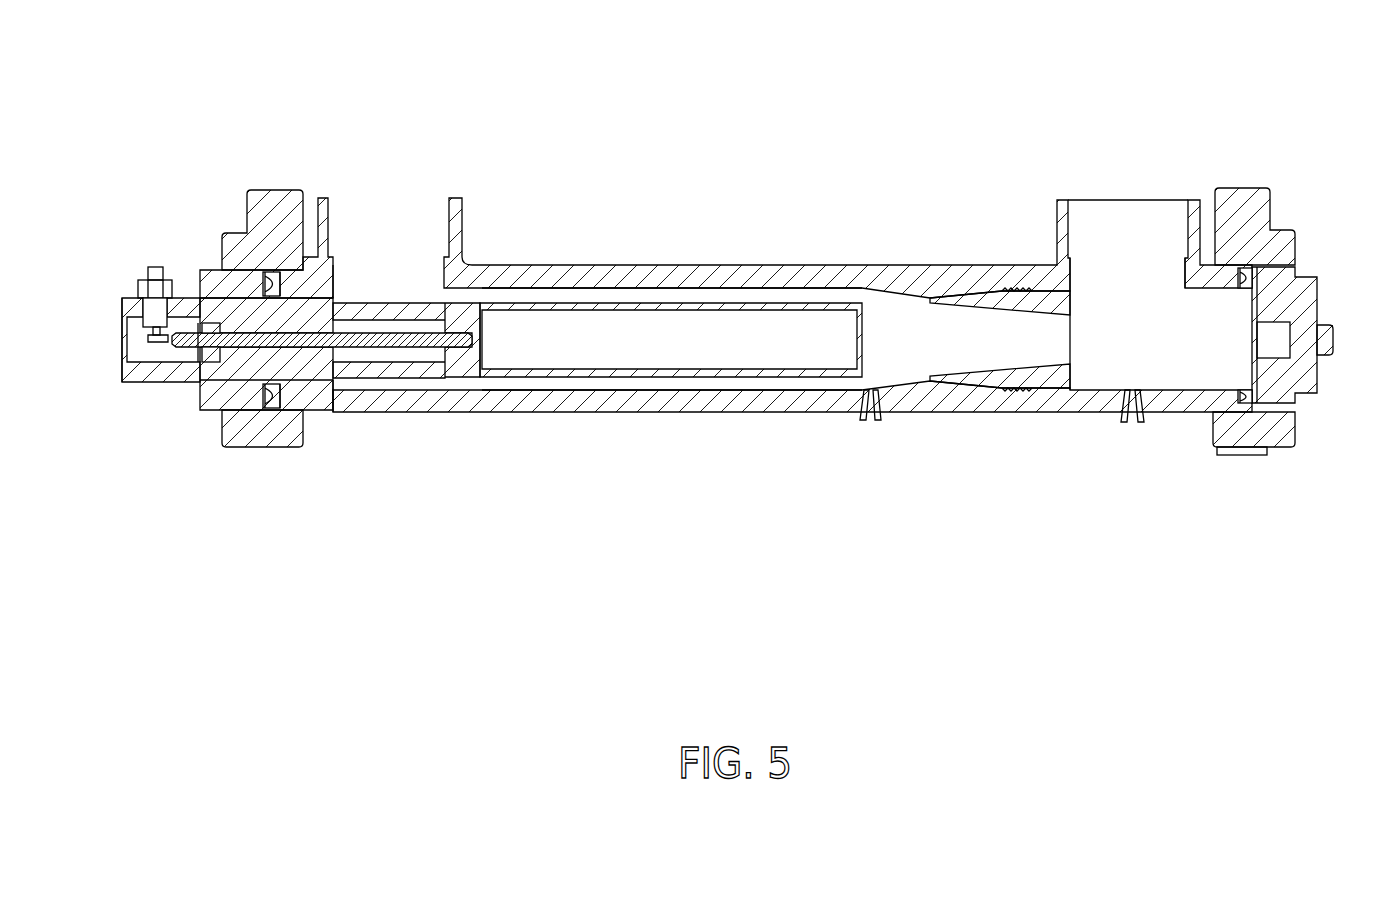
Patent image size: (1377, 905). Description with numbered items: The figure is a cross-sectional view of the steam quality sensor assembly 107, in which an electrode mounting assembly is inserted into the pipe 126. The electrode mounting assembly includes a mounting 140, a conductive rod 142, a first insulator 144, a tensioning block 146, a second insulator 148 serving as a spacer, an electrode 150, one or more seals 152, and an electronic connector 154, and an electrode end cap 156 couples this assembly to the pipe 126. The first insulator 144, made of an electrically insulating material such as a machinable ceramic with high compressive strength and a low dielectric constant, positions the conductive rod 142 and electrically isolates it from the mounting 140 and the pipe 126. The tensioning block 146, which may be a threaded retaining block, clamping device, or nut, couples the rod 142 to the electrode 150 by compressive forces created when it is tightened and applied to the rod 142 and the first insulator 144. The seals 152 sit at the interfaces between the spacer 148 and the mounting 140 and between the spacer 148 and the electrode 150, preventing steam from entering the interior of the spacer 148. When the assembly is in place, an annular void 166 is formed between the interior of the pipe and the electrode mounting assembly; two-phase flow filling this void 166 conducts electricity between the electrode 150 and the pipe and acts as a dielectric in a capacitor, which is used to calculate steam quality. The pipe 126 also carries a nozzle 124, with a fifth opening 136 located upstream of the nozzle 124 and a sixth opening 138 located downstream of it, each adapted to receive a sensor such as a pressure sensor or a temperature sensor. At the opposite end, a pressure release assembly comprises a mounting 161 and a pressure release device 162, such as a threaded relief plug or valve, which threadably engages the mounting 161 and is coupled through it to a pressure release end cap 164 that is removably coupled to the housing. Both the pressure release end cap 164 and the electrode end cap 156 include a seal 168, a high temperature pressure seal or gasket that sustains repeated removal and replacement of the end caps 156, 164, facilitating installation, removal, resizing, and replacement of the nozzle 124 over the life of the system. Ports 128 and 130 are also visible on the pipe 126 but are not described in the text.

The steam quality sensor assembly 107 is at (190, 121).
The nozzle 124 is at (1008, 392).
The pipe 126 is at (572, 265).
The outlet port 128 is at (1128, 200).
The inlet port 130 is at (386, 198).
The fifth opening 136 is at (1131, 424).
The sixth opening 138 is at (870, 422).
The mounting 140 is at (128, 298).
The rod 142 is at (447, 356).
The first insulator 144 is at (203, 386).
The tensioning block 146 is at (165, 378).
The second insulator 148 is at (388, 380).
The electrode 150 is at (558, 380).
The seals 152 is at (476, 300).
The electronic connector 154 is at (155, 267).
The end cap 156 is at (272, 190).
The mounting 161 is at (1314, 280).
The pressure release device 162 is at (1331, 352).
The end cap 164 is at (1249, 188).
The void 166 is at (693, 292).
The seal 168 is at (1272, 447).